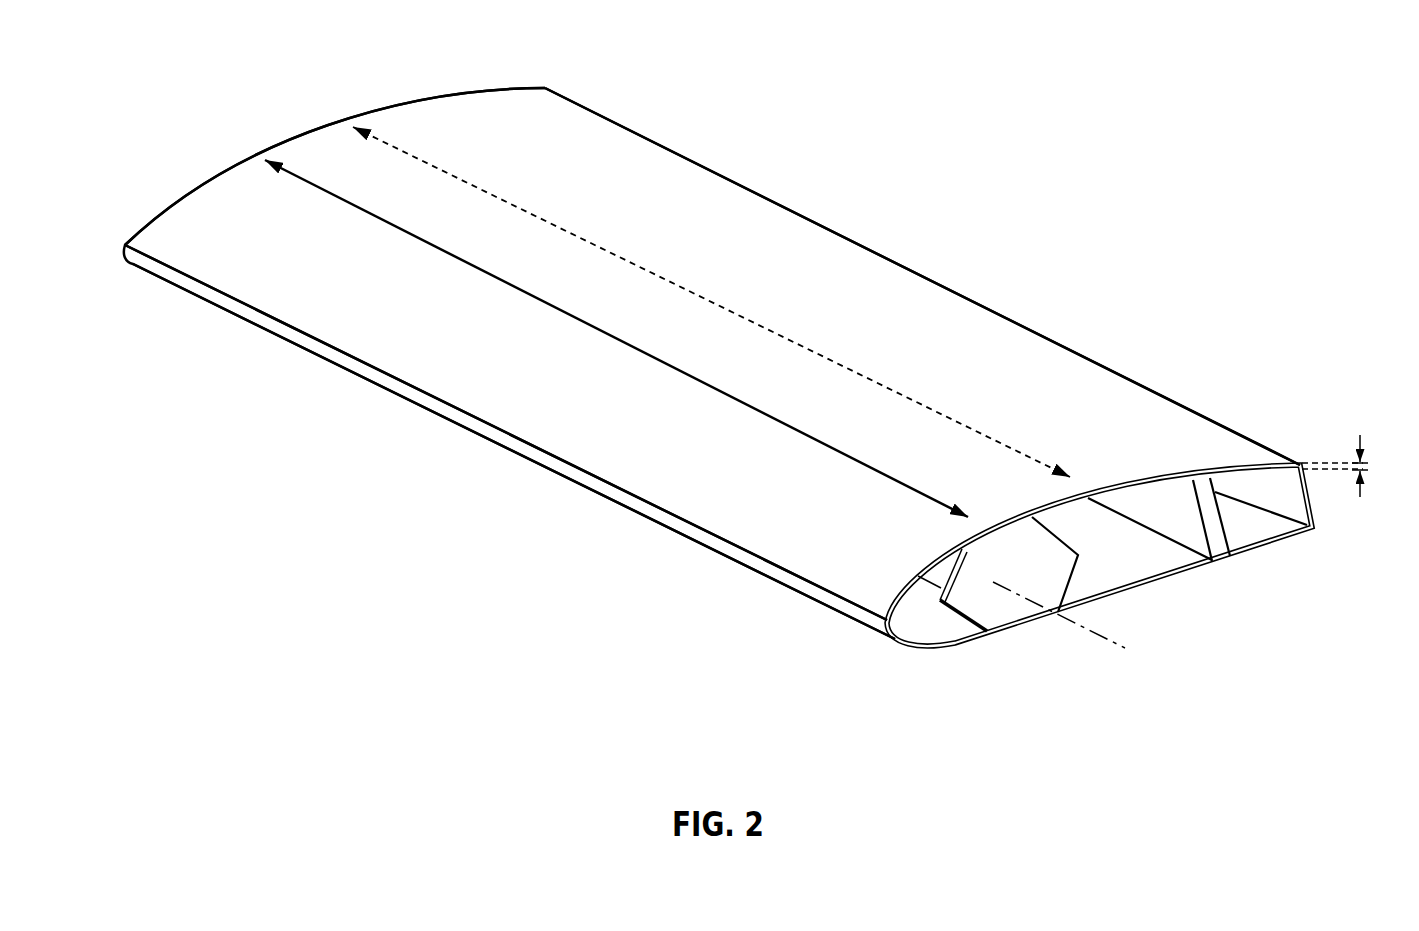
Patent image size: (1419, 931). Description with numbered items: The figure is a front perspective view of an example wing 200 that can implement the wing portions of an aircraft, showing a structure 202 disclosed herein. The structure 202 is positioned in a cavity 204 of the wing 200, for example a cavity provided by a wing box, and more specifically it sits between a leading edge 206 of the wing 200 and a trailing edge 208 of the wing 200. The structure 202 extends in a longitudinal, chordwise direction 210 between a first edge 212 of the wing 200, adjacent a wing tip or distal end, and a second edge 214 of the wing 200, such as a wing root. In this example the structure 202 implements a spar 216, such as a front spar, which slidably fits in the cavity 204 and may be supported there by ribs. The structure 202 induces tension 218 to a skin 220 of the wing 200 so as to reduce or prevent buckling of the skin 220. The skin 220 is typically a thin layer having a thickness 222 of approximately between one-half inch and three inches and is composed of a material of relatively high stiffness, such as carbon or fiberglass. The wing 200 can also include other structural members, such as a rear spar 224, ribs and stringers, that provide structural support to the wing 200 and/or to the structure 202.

The wing 200 is at (187, 78).
The structure 202 is at (1023, 648).
The cavity 204 is at (1103, 573).
The leading edge 206 is at (400, 385).
The trailing edge 208 is at (935, 280).
The longitudinal direction 210 is at (607, 335).
The first edge 212 is at (1113, 487).
The second edge 214 is at (313, 123).
The spar 216 is at (963, 592).
The tension 218 is at (713, 302).
The skin 220 is at (288, 238).
The thickness 222 is at (1363, 448).
The rear spar 224 is at (1197, 530).